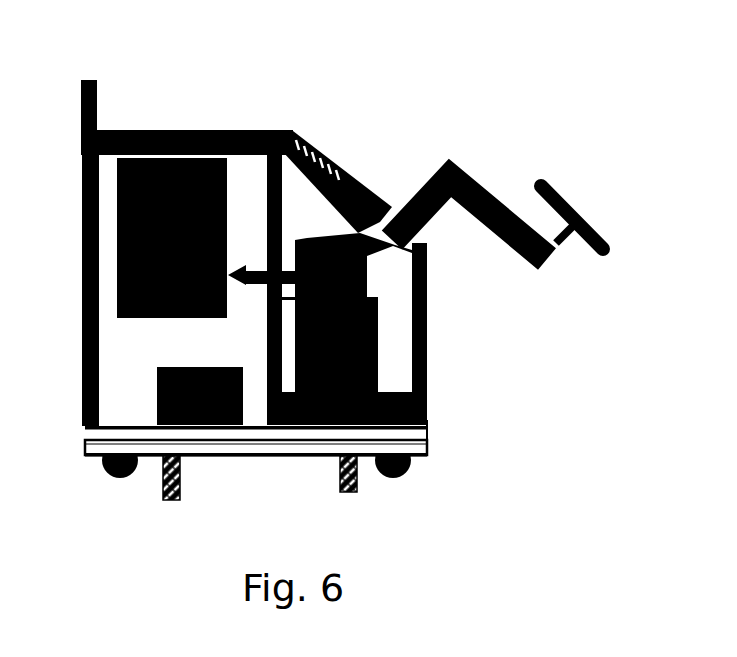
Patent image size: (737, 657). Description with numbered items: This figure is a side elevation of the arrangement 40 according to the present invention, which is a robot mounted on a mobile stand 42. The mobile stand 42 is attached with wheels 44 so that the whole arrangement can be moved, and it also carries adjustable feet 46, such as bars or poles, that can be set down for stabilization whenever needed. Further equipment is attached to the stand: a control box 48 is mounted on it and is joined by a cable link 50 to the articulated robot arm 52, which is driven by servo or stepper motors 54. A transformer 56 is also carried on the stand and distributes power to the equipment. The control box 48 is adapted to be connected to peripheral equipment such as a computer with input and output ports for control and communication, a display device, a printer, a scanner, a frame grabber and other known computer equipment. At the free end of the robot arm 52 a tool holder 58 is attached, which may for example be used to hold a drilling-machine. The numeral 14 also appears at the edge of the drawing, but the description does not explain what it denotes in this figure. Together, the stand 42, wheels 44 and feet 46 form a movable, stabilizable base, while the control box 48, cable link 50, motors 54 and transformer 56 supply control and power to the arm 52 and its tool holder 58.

The adjacent structure 14 is at (15, 40).
The arrangement 40 is at (537, 35).
The mobile stand 42 is at (85, 440).
The wheels 44 is at (123, 478).
The adjustable feet 46 is at (182, 478).
The control box 48 is at (115, 204).
The cable link 50 is at (258, 284).
The articulated robot arm 52 is at (482, 180).
The servo or stepper motors 54 is at (313, 237).
The transformer 56 is at (157, 392).
The tool holder 58 is at (590, 252).